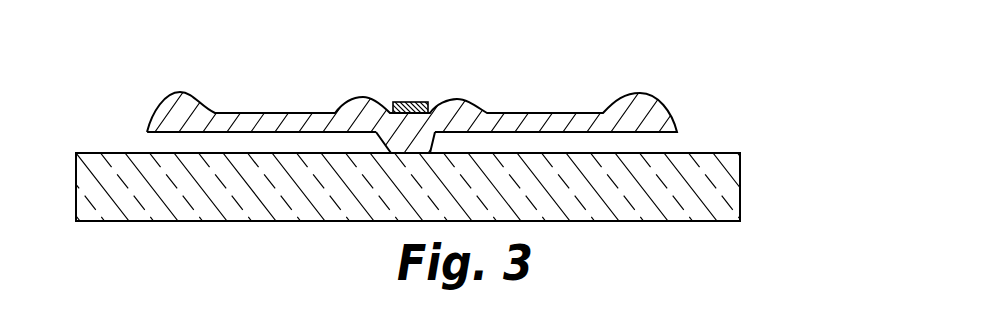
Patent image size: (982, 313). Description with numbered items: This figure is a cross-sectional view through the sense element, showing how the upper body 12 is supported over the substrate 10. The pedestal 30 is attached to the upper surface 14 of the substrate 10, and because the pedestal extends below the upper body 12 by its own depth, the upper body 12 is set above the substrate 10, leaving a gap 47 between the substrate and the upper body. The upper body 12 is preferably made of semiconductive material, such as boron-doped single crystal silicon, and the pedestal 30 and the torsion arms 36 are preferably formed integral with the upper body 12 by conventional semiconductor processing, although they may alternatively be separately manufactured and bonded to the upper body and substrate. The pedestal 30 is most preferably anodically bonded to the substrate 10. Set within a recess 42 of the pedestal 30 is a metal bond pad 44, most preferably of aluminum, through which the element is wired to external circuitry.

The substrate 10 is at (724, 169).
The upper body 12 is at (665, 89).
The upper surface 14 is at (708, 153).
The pedestal 30 is at (435, 111).
The torsion arms 36 is at (267, 115).
The recess 42 is at (391, 103).
The metal bond pad 44 is at (412, 101).
The gap 47 is at (162, 143).